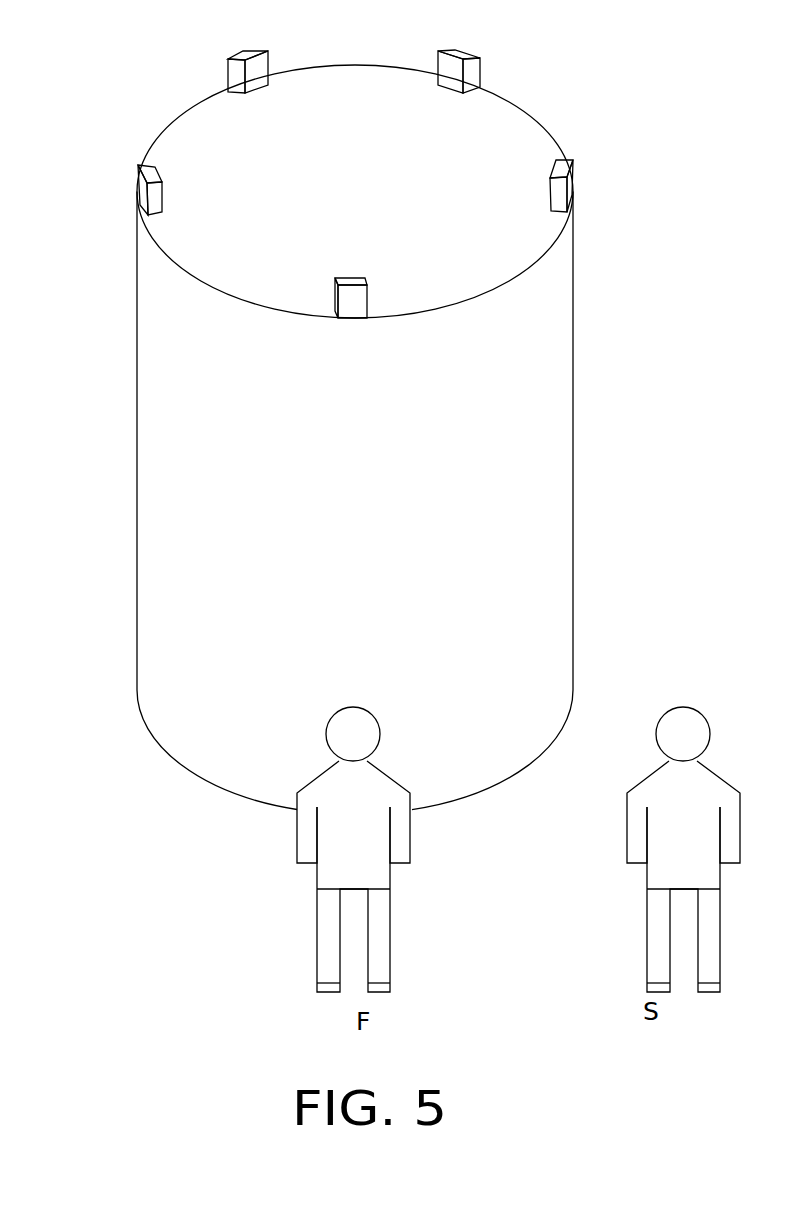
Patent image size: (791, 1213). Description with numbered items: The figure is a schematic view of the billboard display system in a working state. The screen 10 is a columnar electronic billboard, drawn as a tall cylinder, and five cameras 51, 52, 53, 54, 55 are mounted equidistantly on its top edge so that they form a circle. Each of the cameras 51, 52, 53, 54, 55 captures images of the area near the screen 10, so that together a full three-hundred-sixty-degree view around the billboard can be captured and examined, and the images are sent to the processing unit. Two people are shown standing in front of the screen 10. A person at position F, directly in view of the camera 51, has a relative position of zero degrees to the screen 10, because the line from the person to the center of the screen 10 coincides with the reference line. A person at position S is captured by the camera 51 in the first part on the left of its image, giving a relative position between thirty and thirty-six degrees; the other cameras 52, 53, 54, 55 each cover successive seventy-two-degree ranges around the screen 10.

The screen 10 is at (507, 490).
The camera 51 is at (368, 282).
The camera 52 is at (573, 160).
The camera 53 is at (460, 52).
The camera 54 is at (243, 52).
The camera 55 is at (140, 165).